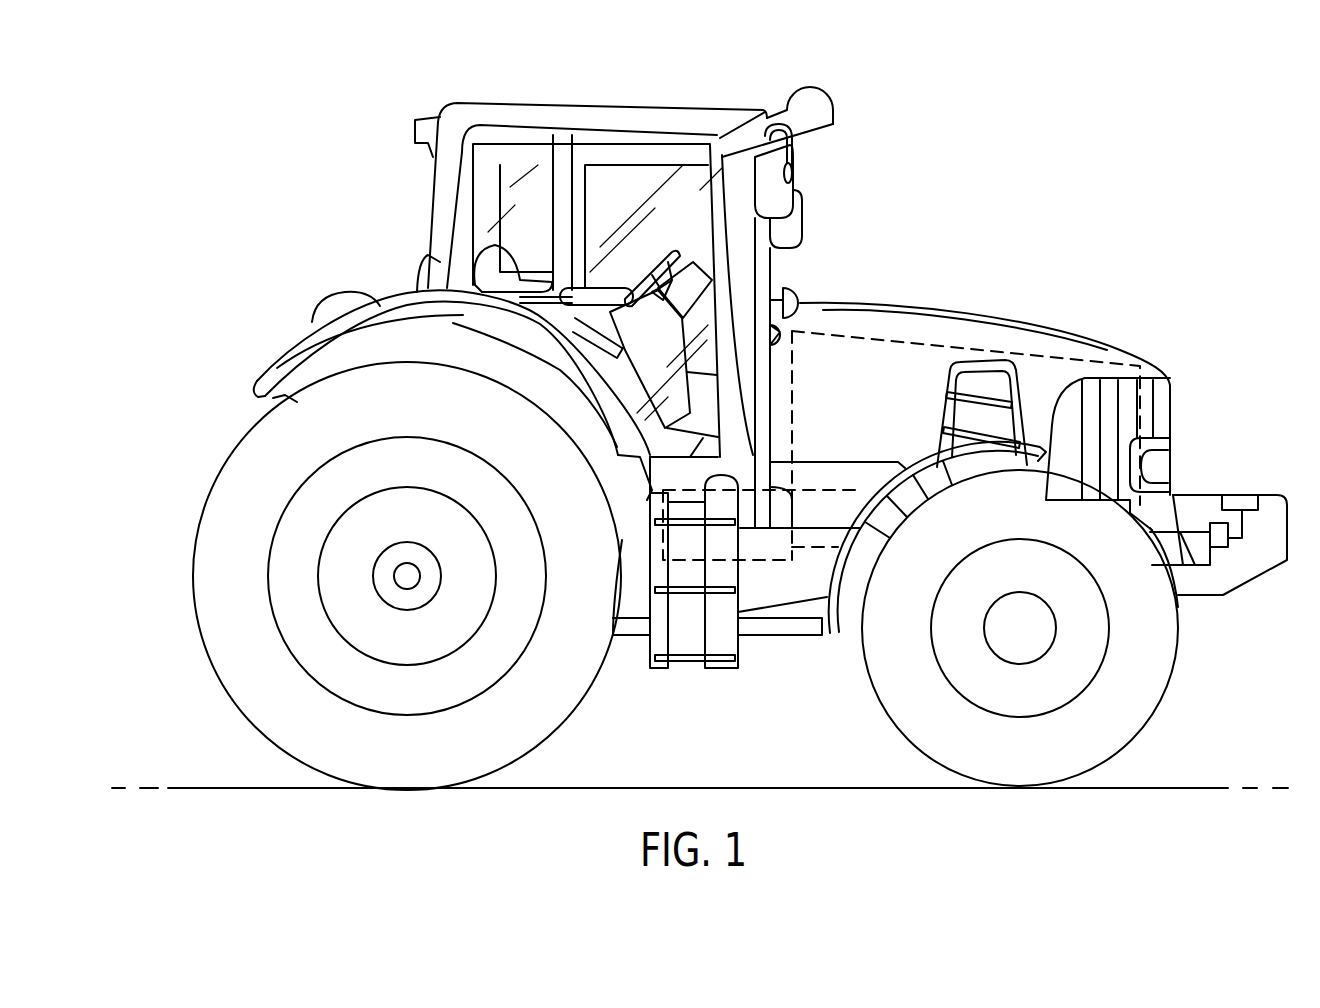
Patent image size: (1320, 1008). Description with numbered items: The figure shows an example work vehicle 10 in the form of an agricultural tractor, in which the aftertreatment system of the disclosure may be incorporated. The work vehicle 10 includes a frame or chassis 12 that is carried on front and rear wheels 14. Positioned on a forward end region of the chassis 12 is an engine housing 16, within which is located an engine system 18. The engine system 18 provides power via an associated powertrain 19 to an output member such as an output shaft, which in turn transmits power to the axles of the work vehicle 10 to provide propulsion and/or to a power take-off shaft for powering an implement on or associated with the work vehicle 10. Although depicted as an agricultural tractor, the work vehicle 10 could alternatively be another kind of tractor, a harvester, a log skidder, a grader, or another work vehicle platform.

The work vehicle 10 is at (358, 96).
The chassis 12 is at (632, 647).
The front and rear wheels 14 is at (407, 576).
The engine housing 16 is at (1070, 333).
The engine system 18 is at (970, 347).
The powertrain 19 is at (787, 572).